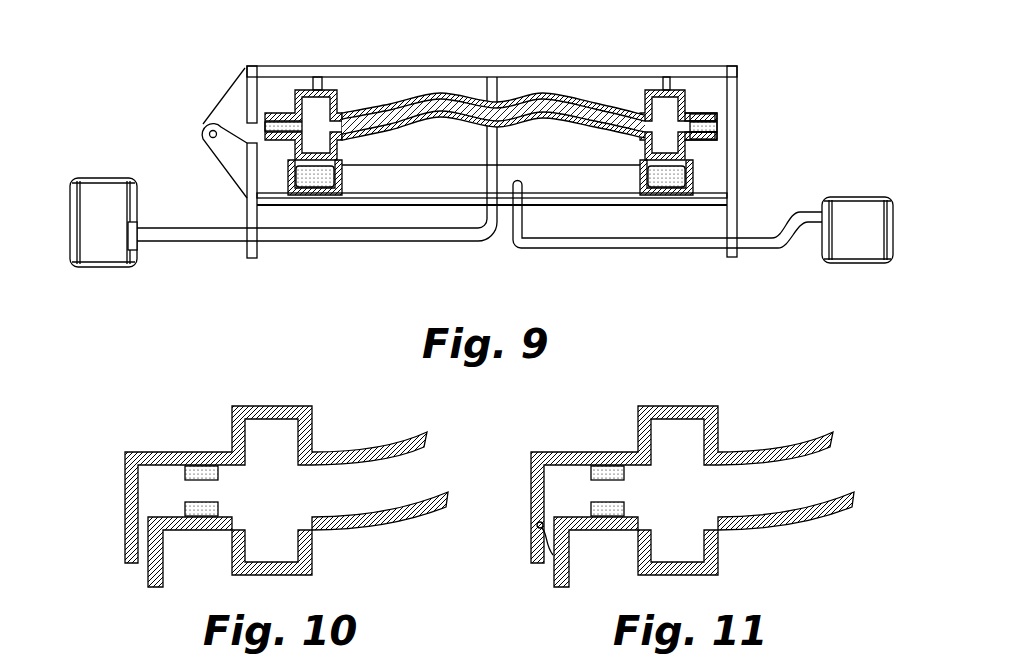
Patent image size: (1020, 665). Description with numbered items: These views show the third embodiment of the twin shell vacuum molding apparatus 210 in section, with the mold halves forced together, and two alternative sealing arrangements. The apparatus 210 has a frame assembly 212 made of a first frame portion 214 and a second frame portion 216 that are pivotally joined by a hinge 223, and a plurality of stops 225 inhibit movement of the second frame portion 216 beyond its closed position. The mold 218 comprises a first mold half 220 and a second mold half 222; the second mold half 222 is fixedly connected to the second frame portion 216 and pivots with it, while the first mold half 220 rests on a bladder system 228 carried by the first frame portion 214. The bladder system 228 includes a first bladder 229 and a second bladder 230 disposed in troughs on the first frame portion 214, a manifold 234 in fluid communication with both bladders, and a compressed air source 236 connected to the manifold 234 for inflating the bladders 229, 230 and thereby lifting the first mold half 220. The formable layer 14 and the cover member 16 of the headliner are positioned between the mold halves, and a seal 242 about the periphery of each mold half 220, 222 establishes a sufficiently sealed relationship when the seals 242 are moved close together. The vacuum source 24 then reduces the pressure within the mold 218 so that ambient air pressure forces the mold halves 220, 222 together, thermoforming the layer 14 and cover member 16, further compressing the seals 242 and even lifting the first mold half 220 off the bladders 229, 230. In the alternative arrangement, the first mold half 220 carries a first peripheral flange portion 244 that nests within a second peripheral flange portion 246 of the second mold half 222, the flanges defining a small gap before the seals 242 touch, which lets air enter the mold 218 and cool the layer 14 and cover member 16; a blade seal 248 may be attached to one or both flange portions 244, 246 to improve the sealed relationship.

In FIG. 9, the formable layer 14 is at (452, 97).
In FIG. 9, the cover member 16 is at (350, 143).
In FIG. 9, the vacuum source 24 is at (98, 178).
In FIG. 9, the apparatus 210 is at (125, 100).
In FIG. 9, the frame assembly 212 is at (217, 87).
In FIG. 9, the first frame portion 214 is at (307, 205).
In FIG. 9, the second frame portion 216 is at (342, 143).
In FIG. 9, the mold 218 is at (739, 90).
In FIG. 9, the first mold half 220 is at (700, 140).
In FIG. 10, the first mold half 220 is at (256, 567).
In FIG. 11, the first mold half 220 is at (608, 530).
In FIG. 9, the second mold half 222 is at (703, 115).
In FIG. 10, the second mold half 222 is at (244, 473).
In FIG. 11, the second mold half 222 is at (638, 430).
In FIG. 9, the hinge 223 is at (200, 133).
In FIG. 9, the stop 225 is at (740, 133).
In FIG. 9, the bladder system 228 is at (859, 258).
In FIG. 9, the first bladder 229 is at (320, 197).
In FIG. 9, the second bladder 230 is at (663, 196).
In FIG. 9, the manifold 234 is at (563, 152).
In FIG. 9, the compressed air source 236 is at (855, 197).
In FIG. 9, the seal 242 is at (712, 122).
In FIG. 10, the seal 242 is at (185, 508).
In FIG. 11, the seal 242 is at (607, 491).
In FIG. 10, the first flange portion 244 is at (148, 580).
In FIG. 10, the second flange portion 246 is at (125, 527).
In FIG. 11, the blade seal 248 is at (550, 560).